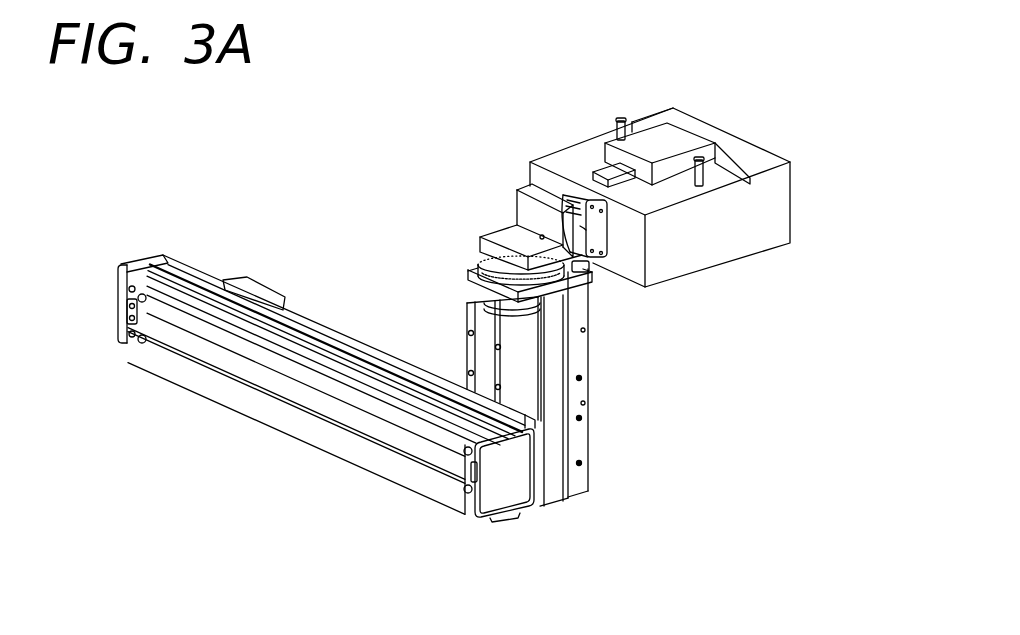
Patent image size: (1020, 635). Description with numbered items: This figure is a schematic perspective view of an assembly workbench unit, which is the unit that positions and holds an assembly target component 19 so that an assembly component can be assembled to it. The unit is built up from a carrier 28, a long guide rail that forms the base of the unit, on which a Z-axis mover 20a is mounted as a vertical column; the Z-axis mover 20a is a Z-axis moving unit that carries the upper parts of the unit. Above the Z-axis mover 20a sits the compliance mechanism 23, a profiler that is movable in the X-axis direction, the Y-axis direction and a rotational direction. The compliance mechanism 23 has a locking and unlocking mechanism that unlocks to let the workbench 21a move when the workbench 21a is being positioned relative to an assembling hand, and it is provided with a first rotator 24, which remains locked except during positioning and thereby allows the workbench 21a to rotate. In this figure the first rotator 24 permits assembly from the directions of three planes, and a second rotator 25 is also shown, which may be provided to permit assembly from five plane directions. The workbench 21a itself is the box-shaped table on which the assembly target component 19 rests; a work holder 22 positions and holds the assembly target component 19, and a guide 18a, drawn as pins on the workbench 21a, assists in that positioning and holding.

The guide 18a is at (620, 120).
The assembly target component 19 is at (672, 172).
The Z-axis mover 20a is at (552, 493).
The workbench 21a is at (665, 253).
The work holder 22 is at (600, 168).
The compliance mechanism 23 is at (490, 258).
The first rotator 24 is at (508, 237).
The second rotator 25 is at (592, 222).
The carrier 28 is at (298, 413).